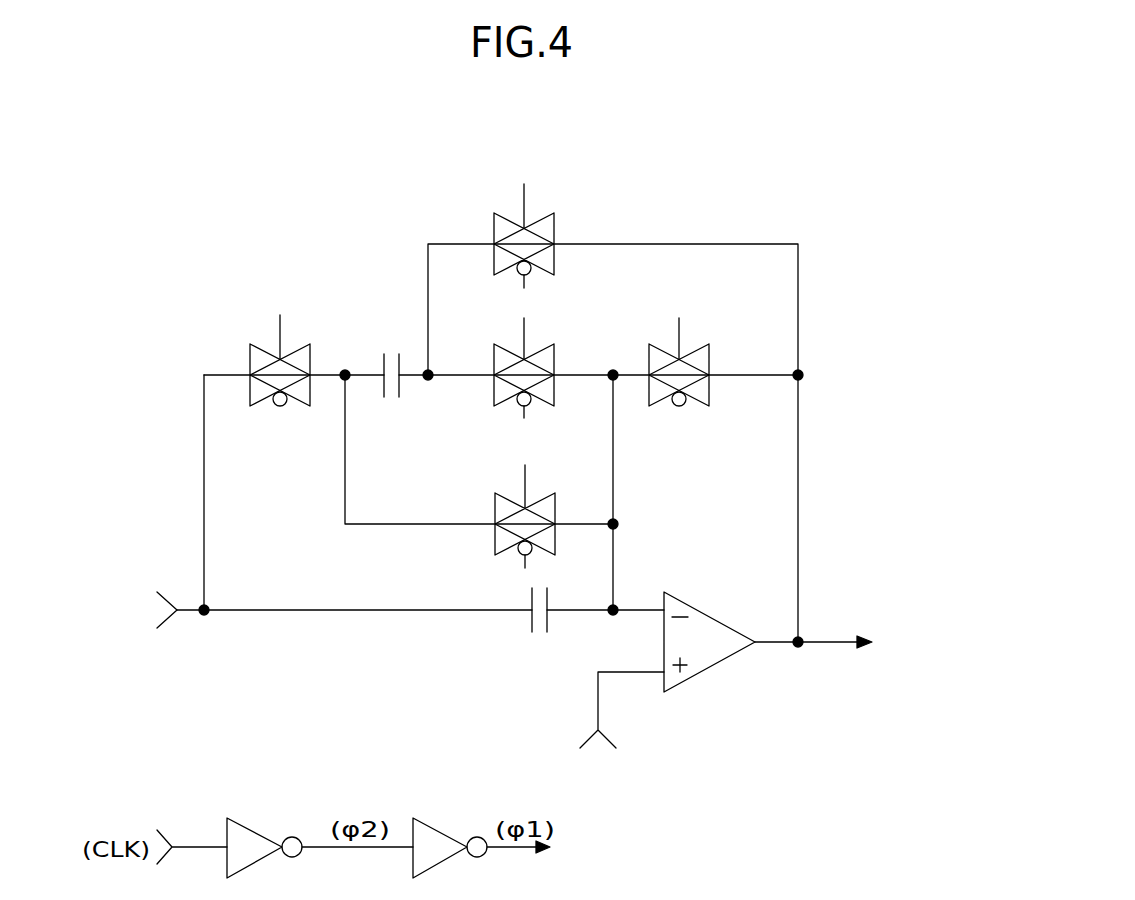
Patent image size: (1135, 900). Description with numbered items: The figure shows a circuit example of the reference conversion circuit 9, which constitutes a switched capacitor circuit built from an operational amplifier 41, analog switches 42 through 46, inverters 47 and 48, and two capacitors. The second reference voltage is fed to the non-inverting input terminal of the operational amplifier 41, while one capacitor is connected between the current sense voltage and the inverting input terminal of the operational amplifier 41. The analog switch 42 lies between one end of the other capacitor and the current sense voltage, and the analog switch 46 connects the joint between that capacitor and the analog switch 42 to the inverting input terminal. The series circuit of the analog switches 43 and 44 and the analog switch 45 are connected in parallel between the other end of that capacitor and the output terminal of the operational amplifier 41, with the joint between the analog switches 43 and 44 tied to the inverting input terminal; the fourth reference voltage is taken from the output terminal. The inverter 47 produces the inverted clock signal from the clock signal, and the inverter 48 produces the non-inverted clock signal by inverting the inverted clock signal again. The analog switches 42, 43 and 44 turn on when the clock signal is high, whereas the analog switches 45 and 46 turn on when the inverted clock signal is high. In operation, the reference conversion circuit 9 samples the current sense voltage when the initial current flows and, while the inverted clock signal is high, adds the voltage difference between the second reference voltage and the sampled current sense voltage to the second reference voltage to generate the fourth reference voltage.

The reference conversion circuit 9 is at (852, 437).
The operational amplifier 41 is at (703, 610).
The analog switch 42 is at (312, 354).
The analog switch 43 is at (558, 352).
The analog switch 44 is at (711, 355).
The analog switch 45 is at (557, 222).
The analog switch 46 is at (495, 545).
The inverter 47 is at (260, 832).
The inverter 48 is at (447, 832).